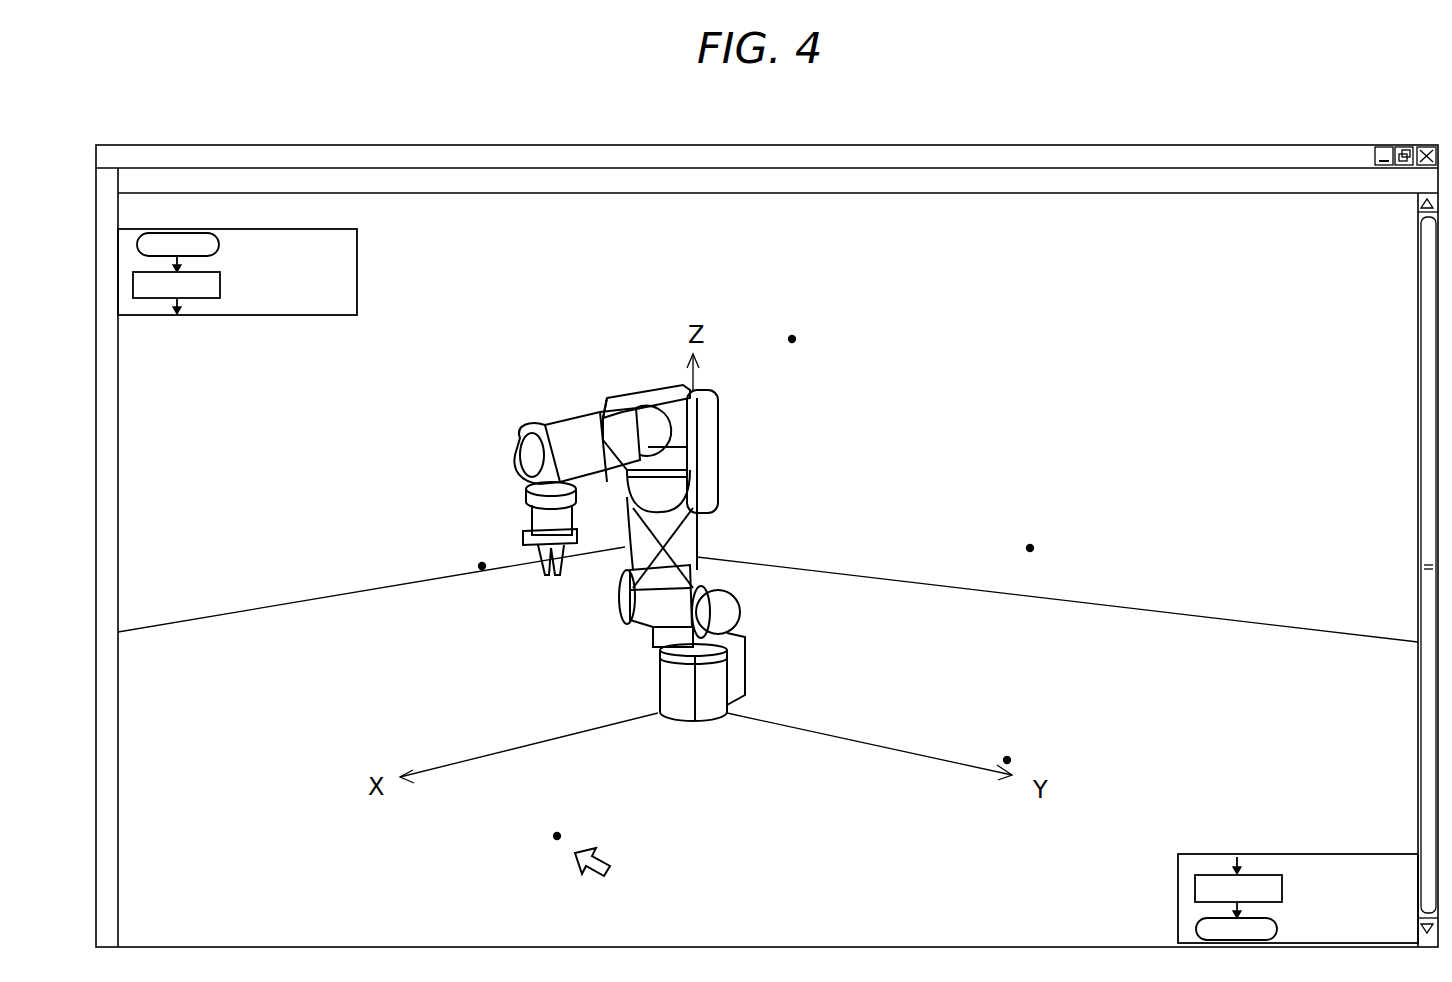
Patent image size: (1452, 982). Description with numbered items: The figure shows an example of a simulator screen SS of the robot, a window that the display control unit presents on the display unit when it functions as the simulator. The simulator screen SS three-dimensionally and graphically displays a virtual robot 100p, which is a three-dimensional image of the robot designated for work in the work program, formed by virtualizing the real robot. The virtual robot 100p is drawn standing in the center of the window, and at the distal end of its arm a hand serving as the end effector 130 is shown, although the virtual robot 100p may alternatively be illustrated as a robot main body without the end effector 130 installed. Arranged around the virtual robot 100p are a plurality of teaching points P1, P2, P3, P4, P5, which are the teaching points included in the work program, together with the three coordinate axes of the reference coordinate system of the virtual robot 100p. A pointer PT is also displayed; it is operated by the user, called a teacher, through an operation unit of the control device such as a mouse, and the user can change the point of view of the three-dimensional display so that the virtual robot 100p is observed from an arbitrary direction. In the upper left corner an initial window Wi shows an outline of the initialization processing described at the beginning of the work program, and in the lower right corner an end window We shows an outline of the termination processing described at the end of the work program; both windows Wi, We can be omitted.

The simulator screen SS is at (835, 193).
The initial window Wi is at (358, 267).
The end window We is at (1178, 897).
The virtual robot 100p is at (576, 394).
The end effector 130 is at (528, 522).
The teaching point P1 is at (779, 357).
The teaching point P2 is at (489, 583).
The teaching point P3 is at (540, 852).
The teaching point P4 is at (1009, 550).
The teaching point P5 is at (989, 746).
The pointer PT is at (600, 850).